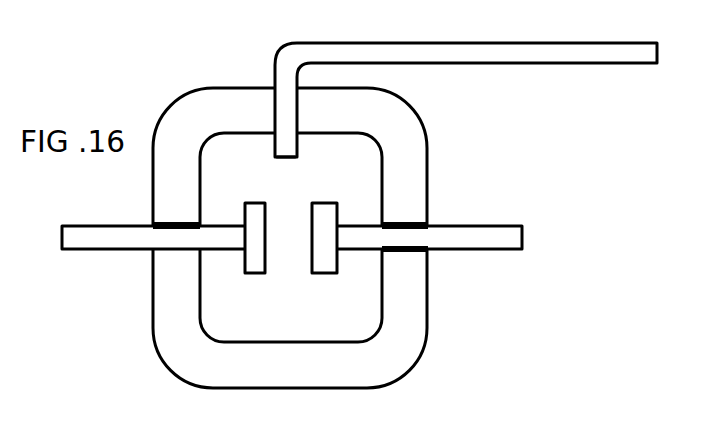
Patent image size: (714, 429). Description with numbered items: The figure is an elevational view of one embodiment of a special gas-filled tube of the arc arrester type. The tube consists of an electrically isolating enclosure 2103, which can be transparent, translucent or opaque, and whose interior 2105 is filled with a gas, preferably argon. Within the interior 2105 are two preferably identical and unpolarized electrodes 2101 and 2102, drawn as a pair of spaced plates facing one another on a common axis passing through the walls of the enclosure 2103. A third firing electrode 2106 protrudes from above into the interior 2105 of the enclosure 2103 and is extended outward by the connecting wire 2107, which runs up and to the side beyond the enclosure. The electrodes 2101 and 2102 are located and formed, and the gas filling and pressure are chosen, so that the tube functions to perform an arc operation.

The electrode 2101 is at (253, 203).
The electrode 2102 is at (328, 266).
The electrically isolating enclosure 2103 is at (306, 380).
The interior 2105 is at (306, 303).
The third firing electrode 2106 is at (296, 153).
The connecting wire 2107 is at (579, 42).